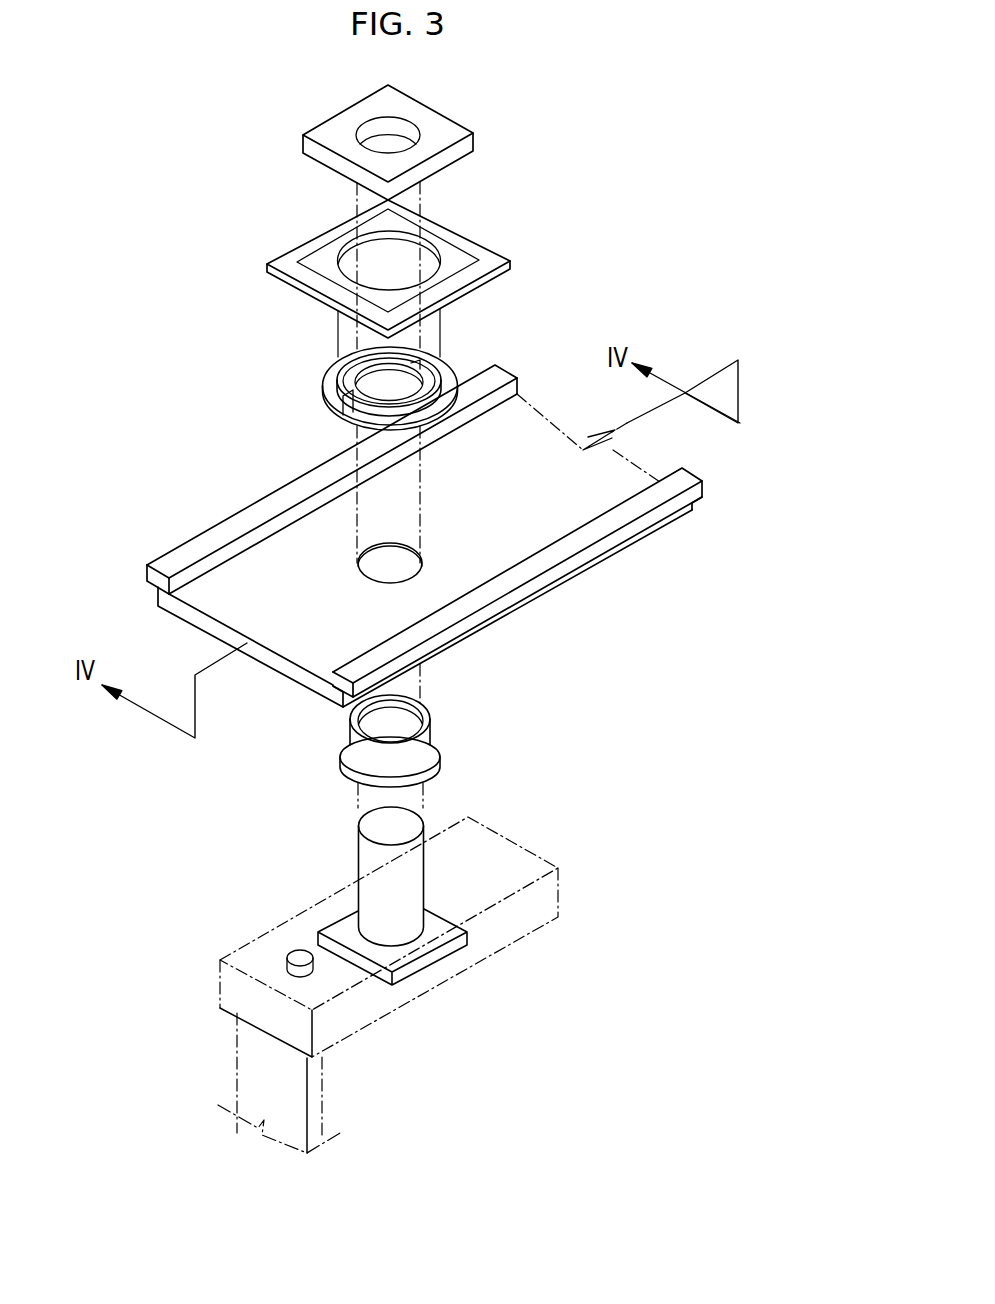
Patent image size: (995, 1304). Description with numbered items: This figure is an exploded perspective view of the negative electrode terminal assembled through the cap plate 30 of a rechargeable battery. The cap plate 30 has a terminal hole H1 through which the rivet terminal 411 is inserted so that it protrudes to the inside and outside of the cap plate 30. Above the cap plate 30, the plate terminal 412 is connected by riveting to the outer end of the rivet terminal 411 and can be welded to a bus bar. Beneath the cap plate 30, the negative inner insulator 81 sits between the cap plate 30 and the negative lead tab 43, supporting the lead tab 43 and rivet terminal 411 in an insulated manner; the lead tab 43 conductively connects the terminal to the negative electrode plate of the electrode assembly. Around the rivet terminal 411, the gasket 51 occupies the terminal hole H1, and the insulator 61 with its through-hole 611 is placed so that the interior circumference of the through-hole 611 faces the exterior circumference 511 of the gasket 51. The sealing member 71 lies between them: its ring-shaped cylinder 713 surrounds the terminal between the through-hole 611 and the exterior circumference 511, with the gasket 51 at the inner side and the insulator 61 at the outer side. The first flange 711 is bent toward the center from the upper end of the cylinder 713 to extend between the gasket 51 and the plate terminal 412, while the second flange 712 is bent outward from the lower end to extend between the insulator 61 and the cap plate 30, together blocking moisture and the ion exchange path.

The plate terminal 412 is at (470, 143).
The through-hole 611 is at (352, 240).
The insulator 61 is at (374, 259).
The sealing member 71 is at (383, 370).
The first flange 711 is at (349, 376).
The cylinder 713 is at (340, 391).
The second flange 712 is at (325, 401).
The terminal hole H1 is at (373, 556).
The cap plate 30 is at (424, 536).
The exterior circumference 511 is at (408, 714).
The gasket 51 is at (380, 749).
The rivet terminal 411 is at (359, 852).
The negative inner insulator 81 is at (507, 847).
The negative lead tab 43 is at (317, 1090).